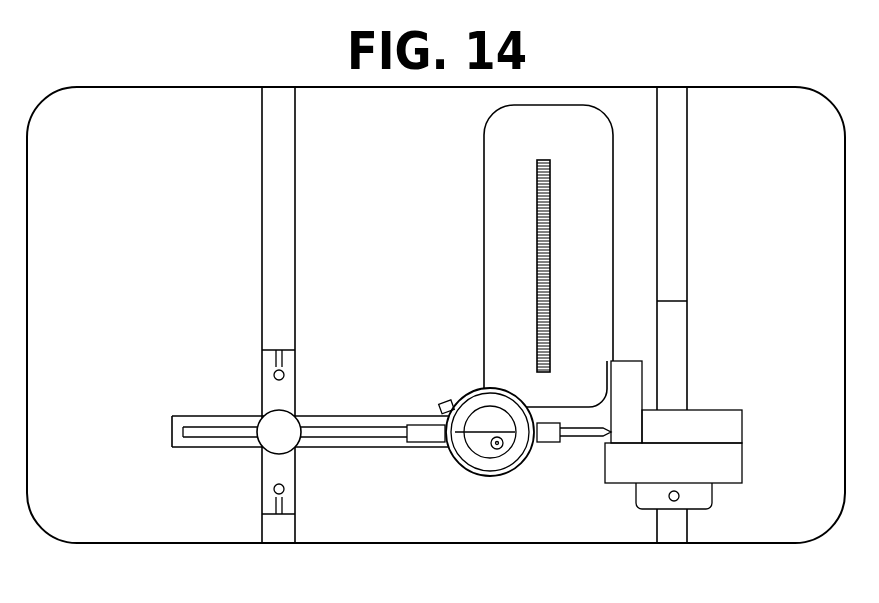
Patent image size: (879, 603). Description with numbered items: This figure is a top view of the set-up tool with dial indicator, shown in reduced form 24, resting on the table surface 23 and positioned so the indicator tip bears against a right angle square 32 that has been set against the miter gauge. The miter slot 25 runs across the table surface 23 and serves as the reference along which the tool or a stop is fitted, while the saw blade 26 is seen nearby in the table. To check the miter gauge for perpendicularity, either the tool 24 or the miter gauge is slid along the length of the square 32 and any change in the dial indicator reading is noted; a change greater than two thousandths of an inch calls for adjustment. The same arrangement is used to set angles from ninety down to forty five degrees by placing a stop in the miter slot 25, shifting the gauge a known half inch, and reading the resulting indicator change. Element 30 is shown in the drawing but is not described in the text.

The table surface 23 is at (90, 128).
The reduced view of the set-up tool 24 is at (253, 422).
The miter slot 25 is at (275, 200).
The saw blade 26 is at (538, 353).
The clamp 30 is at (640, 507).
The square 32 is at (708, 425).